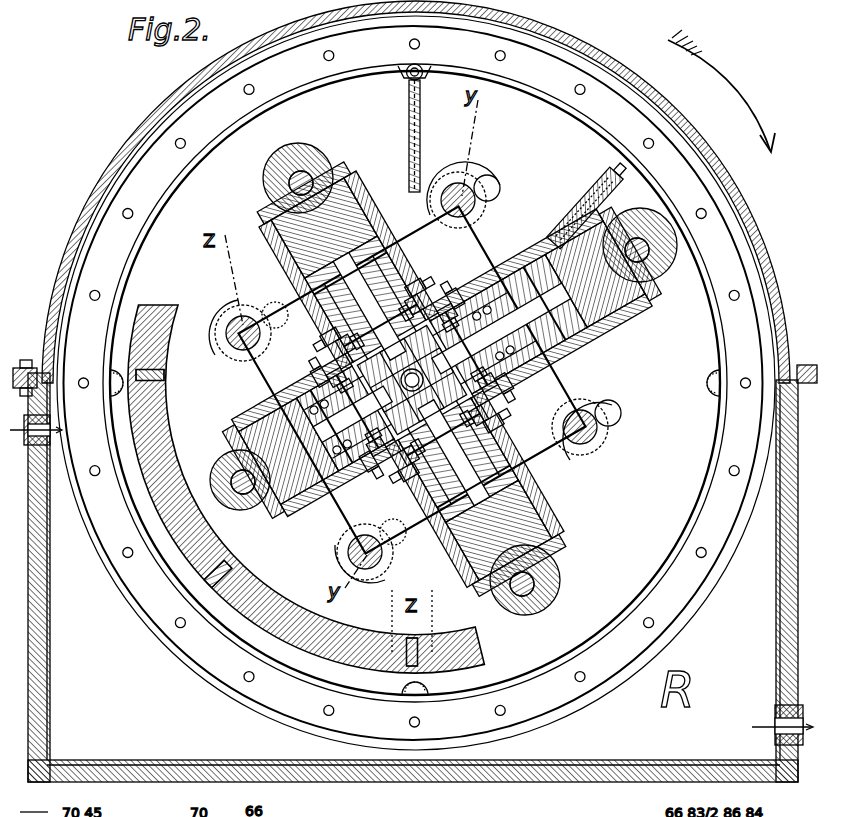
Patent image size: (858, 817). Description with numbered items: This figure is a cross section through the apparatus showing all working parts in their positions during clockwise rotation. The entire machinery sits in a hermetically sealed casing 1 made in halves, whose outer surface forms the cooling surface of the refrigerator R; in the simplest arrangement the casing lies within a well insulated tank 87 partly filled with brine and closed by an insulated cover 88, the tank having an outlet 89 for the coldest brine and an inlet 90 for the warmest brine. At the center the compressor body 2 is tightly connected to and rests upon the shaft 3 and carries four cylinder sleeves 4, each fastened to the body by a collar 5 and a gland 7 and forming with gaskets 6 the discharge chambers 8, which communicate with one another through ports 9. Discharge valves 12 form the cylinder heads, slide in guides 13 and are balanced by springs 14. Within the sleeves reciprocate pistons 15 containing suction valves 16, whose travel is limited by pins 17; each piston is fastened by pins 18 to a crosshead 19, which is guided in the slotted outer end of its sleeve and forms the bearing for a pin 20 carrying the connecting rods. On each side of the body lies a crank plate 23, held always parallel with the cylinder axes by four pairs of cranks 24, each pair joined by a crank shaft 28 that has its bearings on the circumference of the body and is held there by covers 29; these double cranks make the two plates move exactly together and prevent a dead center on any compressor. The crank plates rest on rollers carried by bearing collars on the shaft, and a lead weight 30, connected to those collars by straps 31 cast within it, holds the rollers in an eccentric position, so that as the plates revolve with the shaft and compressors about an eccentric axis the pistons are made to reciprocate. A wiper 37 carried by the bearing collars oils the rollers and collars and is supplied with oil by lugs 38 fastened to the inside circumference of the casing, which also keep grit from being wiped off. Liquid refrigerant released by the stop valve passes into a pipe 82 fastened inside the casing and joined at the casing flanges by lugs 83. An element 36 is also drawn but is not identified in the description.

The casing 1 is at (122, 330).
The compressor body 2 is at (450, 300).
The shaft 3 is at (382, 380).
The cylinder sleeves 4 is at (345, 185).
The collars 5 is at (385, 212).
The gaskets 6 is at (283, 266).
The glands 7 is at (385, 200).
The discharge chambers 8 is at (411, 381).
The ports 9 is at (427, 379).
The discharge valves 12 is at (410, 270).
The guides 13 is at (425, 292).
The springs 14 is at (452, 210).
The pistons 15 is at (262, 240).
The suction valves 16 is at (355, 205).
The pins 17 is at (300, 240).
The pins 18 is at (268, 210).
The crosshead 19 is at (288, 190).
The pin 20 is at (296, 173).
The crank plate 23 is at (500, 190).
The cranks 24 is at (476, 203).
The crank shafts 28 is at (236, 336).
The covers 29 is at (236, 320).
The weight 30 is at (150, 452).
The straps 31 is at (148, 380).
The flange ring 36 is at (125, 248).
The wiper 37 is at (618, 177).
The lugs 38 is at (38, 545).
The pipe 82 is at (410, 78).
The lugs 83 is at (424, 76).
The tank 87 is at (46, 715).
The cover 88 is at (48, 347).
The outlet 89 is at (769, 725).
The inlet 90 is at (35, 447).